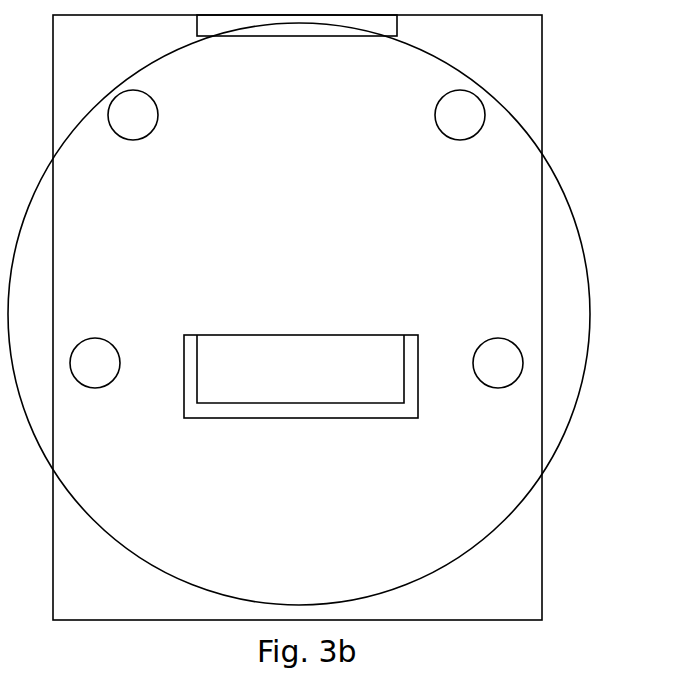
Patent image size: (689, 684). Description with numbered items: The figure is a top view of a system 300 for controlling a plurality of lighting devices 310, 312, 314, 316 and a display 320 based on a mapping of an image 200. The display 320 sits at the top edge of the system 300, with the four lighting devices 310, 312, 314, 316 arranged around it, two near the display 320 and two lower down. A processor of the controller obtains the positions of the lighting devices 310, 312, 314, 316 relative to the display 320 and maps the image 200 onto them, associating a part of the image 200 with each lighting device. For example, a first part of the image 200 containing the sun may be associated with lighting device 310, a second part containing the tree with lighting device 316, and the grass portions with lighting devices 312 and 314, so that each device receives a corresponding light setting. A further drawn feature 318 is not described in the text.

The substrate 200 is at (582, 390).
The circular member 300 is at (311, 544).
The tab 320 is at (304, 29).
The hole 312 is at (137, 137).
The hole 314 is at (467, 132).
The hole 310 is at (107, 376).
The hole 316 is at (492, 371).
The slot 318 is at (301, 376).